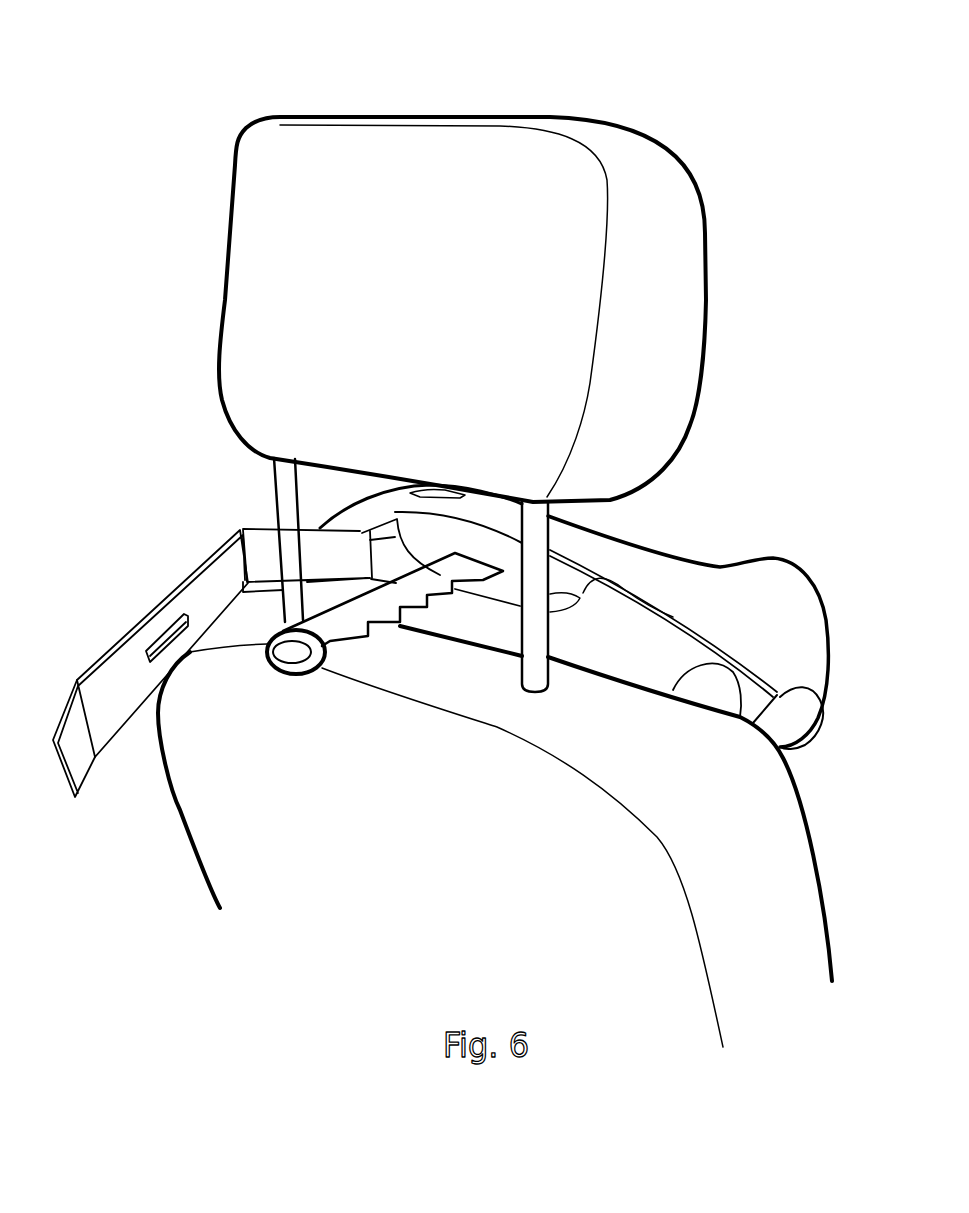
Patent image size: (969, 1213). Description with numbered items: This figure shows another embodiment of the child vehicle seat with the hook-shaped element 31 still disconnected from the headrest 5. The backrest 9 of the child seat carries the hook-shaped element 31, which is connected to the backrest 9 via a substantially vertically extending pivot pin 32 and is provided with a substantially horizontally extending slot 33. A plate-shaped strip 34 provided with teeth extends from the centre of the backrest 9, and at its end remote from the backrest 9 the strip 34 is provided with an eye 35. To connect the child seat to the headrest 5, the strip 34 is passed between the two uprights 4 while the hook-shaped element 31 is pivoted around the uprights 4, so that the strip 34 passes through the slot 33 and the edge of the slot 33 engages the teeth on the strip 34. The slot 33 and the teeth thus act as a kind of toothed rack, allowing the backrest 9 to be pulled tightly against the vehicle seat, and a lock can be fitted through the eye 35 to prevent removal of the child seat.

The uprights 4 is at (276, 497).
The headrest 5 is at (427, 160).
The backrest 9 is at (703, 588).
The hook-shaped element 31 is at (122, 658).
The pivot pin 32 is at (362, 530).
The slot 33 is at (177, 617).
The strip 34 is at (357, 617).
The eye 35 is at (290, 660).